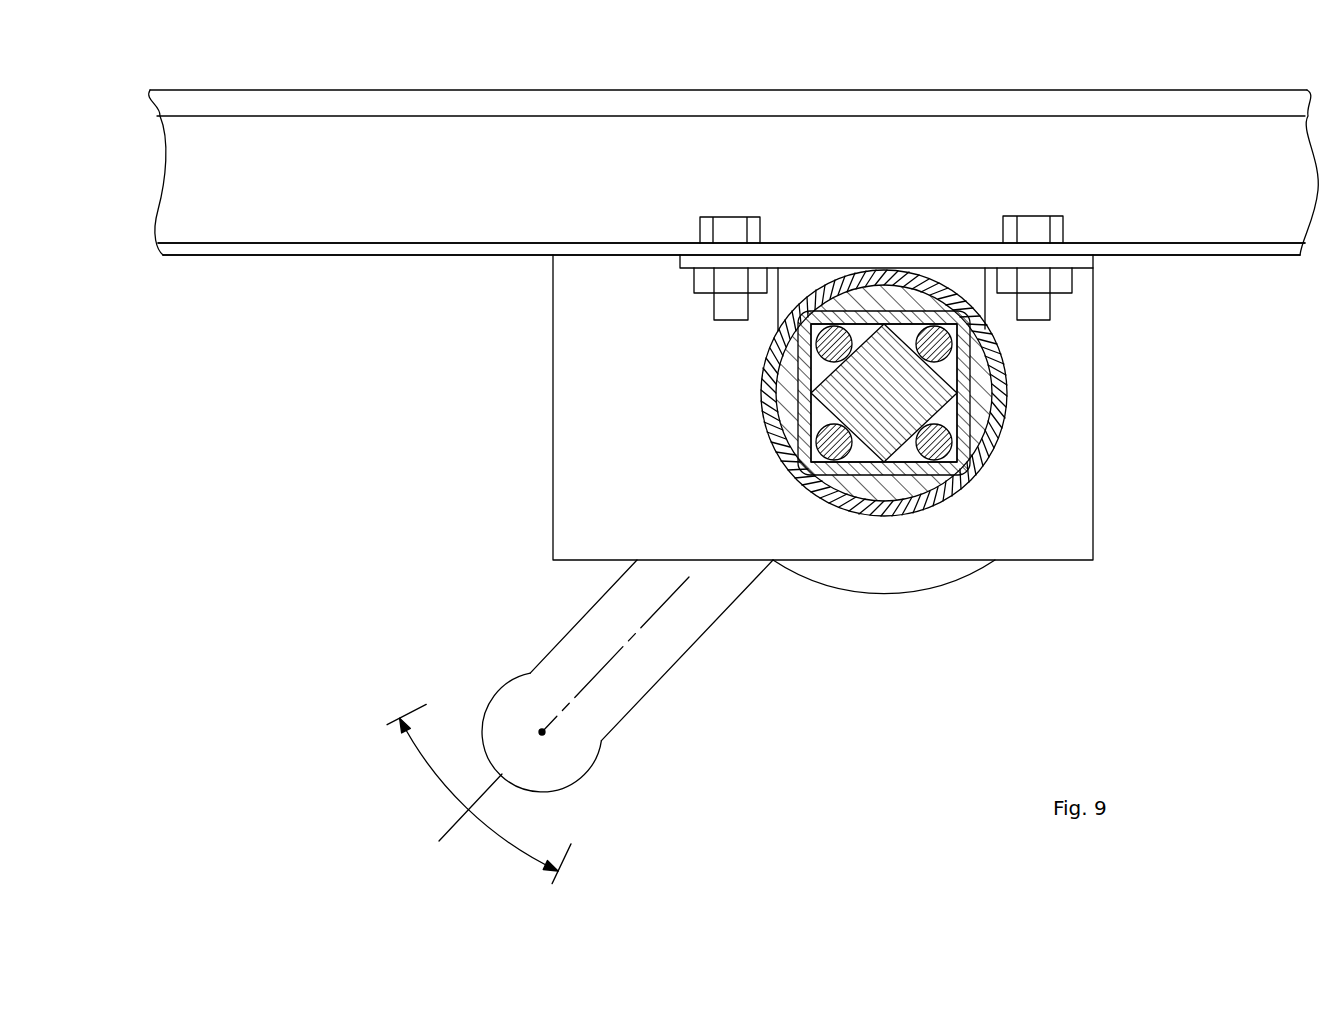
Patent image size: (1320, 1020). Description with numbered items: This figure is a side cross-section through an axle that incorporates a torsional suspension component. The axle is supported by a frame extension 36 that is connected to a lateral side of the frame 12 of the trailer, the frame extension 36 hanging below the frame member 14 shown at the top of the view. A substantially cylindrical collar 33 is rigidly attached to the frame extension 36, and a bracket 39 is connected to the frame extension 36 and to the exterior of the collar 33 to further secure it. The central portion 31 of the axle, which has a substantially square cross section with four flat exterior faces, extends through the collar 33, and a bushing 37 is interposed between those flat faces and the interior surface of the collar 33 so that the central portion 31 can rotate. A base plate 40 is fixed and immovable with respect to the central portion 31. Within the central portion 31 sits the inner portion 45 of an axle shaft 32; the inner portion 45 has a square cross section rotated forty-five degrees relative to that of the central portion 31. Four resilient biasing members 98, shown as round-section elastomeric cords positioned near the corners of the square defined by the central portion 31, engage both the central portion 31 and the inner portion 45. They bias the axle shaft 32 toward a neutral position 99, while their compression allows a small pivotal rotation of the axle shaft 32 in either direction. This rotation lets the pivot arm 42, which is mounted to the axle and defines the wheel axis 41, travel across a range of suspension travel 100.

The rail 14 is at (1190, 90).
The frame 12 is at (295, 257).
The frame extension 36 is at (553, 398).
The bracket 39 is at (778, 318).
The resilient biasing member 98 is at (979, 352).
The central portion 31 is at (972, 369).
The inner portion 45 is at (806, 410).
The axle shaft 32 is at (970, 418).
The bushing 37 is at (973, 432).
The collar 33 is at (980, 470).
The base plate 40 is at (921, 593).
The pivot arm 42 is at (708, 634).
The wheel axis 41 is at (545, 732).
The neutral position 99 is at (452, 828).
The range of suspension travel 100 is at (512, 846).